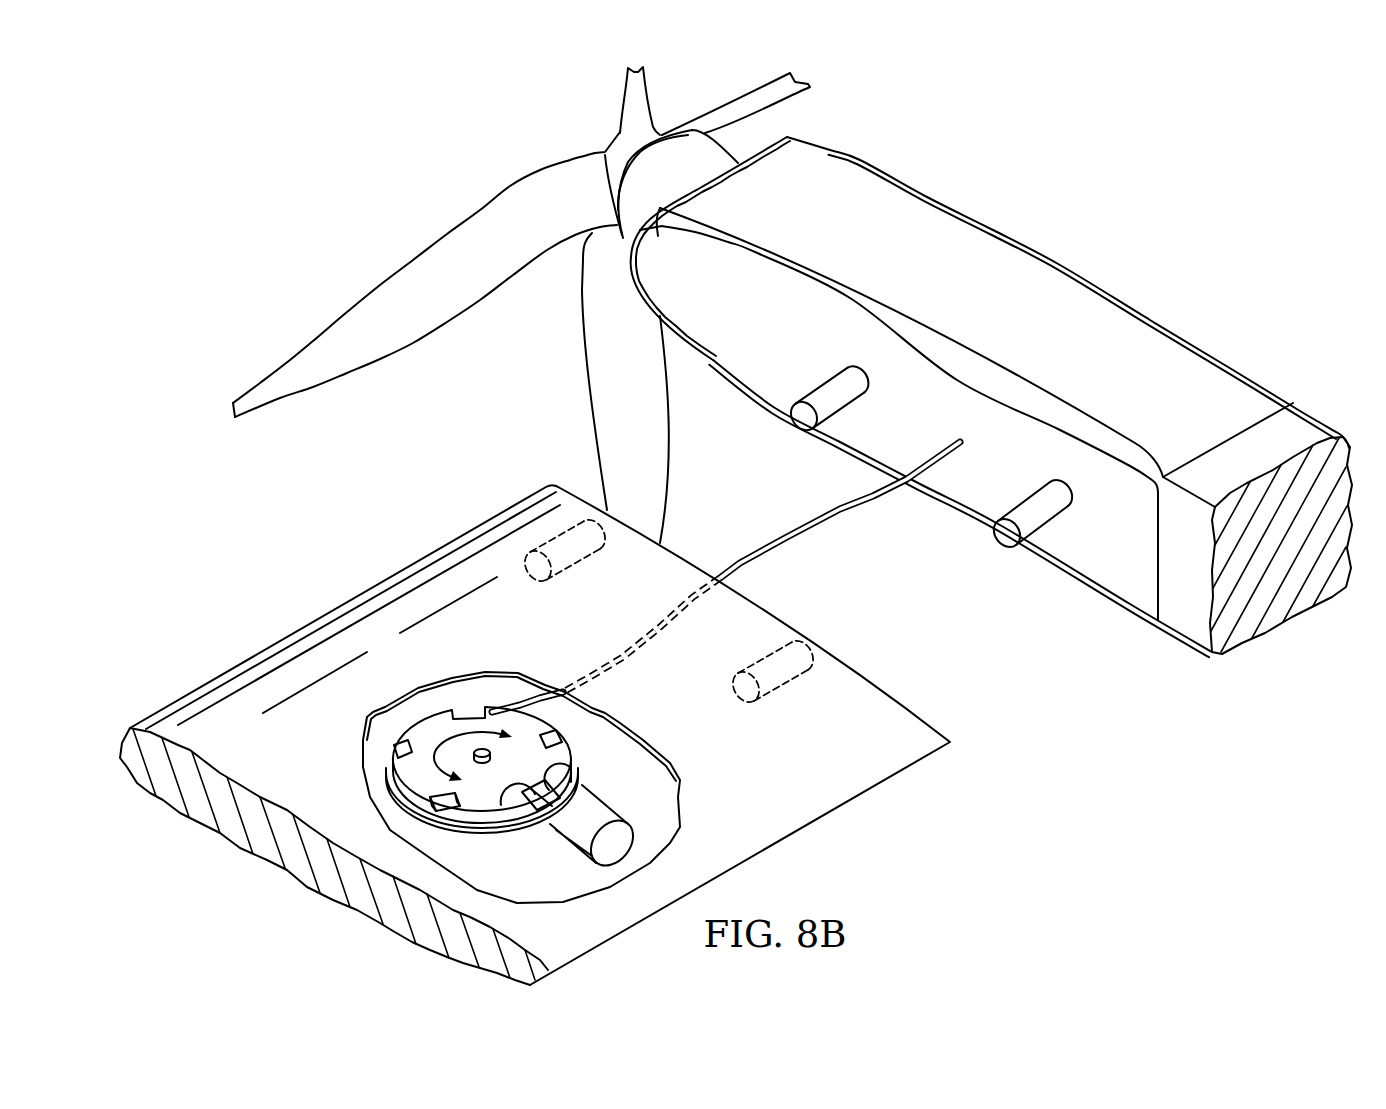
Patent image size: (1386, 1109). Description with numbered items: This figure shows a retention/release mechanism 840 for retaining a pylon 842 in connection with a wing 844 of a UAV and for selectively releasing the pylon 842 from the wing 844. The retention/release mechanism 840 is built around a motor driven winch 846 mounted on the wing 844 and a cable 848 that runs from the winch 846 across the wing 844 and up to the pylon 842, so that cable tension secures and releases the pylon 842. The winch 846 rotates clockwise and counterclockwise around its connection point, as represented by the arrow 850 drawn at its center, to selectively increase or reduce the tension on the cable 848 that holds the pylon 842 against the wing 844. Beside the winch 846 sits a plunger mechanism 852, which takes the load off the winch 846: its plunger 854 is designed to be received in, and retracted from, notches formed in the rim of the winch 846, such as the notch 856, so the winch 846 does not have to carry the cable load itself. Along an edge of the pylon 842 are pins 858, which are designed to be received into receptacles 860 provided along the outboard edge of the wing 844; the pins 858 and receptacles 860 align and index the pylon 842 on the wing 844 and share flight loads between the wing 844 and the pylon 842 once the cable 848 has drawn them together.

The retention/release mechanism 840 is at (600, 740).
The pylon 842 is at (1048, 266).
The wing 844 is at (340, 609).
The motor driven winch 846 is at (428, 727).
The cable 848 is at (790, 544).
The arrow 850 is at (472, 733).
The plunger mechanism 852 is at (564, 862).
The plunger 854 is at (500, 794).
The notch 856 is at (572, 770).
The pins 858 is at (840, 430).
The receptacles 860 is at (572, 571).